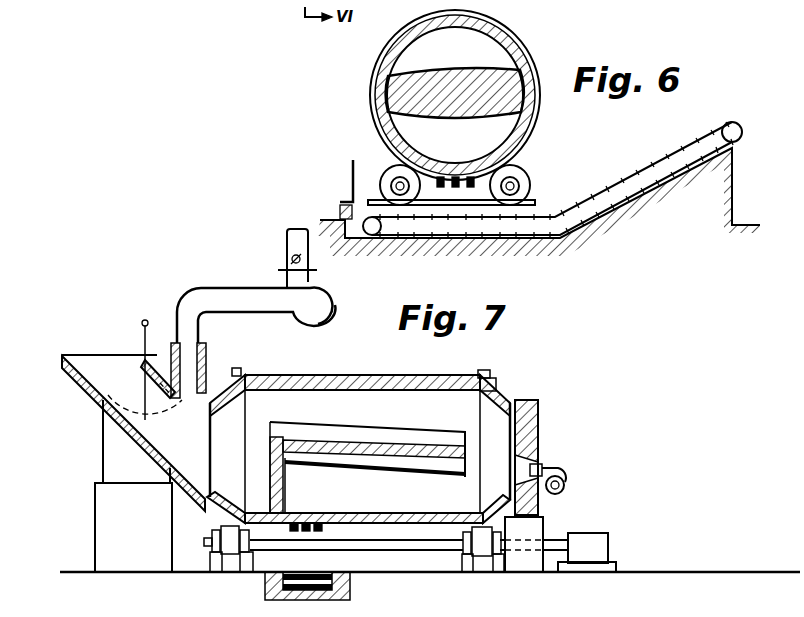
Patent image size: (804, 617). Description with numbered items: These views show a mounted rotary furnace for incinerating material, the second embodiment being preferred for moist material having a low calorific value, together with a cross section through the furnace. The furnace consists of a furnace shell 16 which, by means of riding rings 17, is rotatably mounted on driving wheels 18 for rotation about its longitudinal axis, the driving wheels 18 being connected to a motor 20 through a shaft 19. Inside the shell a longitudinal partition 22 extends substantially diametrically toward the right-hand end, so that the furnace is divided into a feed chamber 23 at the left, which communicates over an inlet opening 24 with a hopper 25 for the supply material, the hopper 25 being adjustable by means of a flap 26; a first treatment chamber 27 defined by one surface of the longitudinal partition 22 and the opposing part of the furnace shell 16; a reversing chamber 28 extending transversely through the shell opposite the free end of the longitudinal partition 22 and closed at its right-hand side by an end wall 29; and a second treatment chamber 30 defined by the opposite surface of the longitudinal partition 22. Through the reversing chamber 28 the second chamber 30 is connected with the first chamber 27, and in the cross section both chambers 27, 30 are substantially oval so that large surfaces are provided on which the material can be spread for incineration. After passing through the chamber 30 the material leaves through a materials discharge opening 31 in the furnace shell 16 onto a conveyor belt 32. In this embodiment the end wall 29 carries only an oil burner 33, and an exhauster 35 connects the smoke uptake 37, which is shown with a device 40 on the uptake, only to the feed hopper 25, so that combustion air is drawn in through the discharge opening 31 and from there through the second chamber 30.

In FIG. 6, the furnace shell 16 is at (530, 48).
In FIG. 7, the furnace shell 16 is at (346, 377).
In FIG. 7, the riding rings 17 is at (242, 368).
In FIG. 6, the driving wheels 18 is at (392, 176).
In FIG. 7, the driving wheels 18 is at (228, 556).
In FIG. 7, the shaft 19 is at (398, 548).
In FIG. 7, the motor 20 is at (603, 547).
In FIG. 6, the longitudinal partition 22 is at (408, 90).
In FIG. 7, the longitudinal partition 22 is at (392, 445).
In FIG. 7, the feed chamber 23 is at (227, 451).
In FIG. 6, the inlet opening 24 is at (455, 49).
In FIG. 7, the inlet opening 24 is at (205, 496).
In FIG. 7, the hopper 25 is at (100, 378).
In FIG. 7, the flap 26 is at (142, 402).
In FIG. 6, the first treatment chamber 27 is at (455, 140).
In FIG. 7, the first treatment chamber 27 is at (367, 457).
In FIG. 7, the reversing chamber 28 is at (495, 423).
In FIG. 7, the end wall 29 is at (534, 434).
In FIG. 7, the second treatment chamber 30 is at (375, 485).
In FIG. 6, the materials discharge opening 31 is at (448, 184).
In FIG. 7, the materials discharge opening 31 is at (322, 526).
In FIG. 6, the conveyor belt 32 is at (628, 180).
In FIG. 7, the conveyor belt 32 is at (296, 600).
In FIG. 7, the oil burner 33 is at (566, 479).
In FIG. 7, the exhauster 35 is at (340, 291).
In FIG. 7, the smoke uptake 37 is at (287, 244).
In FIG. 7, the damper 40 is at (290, 259).